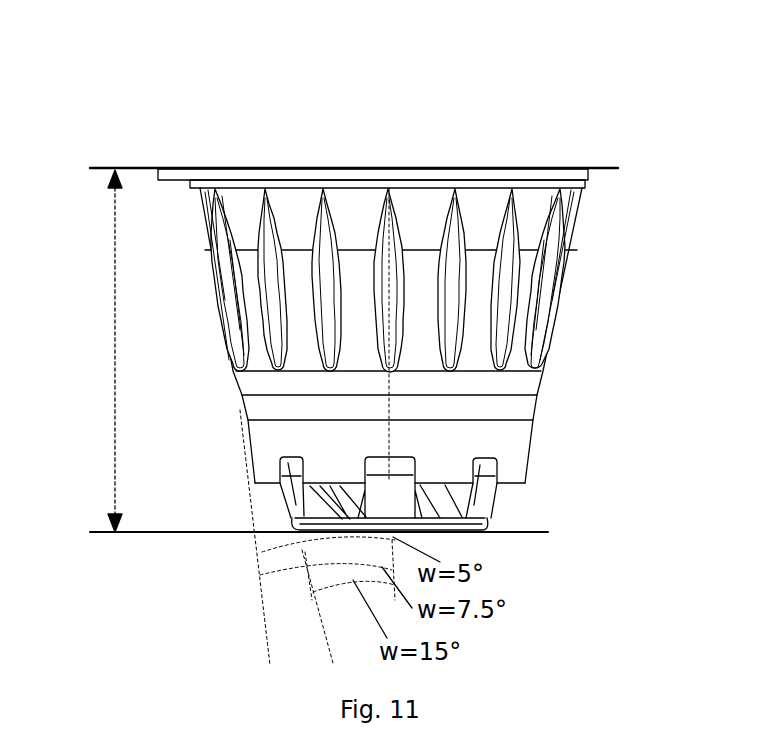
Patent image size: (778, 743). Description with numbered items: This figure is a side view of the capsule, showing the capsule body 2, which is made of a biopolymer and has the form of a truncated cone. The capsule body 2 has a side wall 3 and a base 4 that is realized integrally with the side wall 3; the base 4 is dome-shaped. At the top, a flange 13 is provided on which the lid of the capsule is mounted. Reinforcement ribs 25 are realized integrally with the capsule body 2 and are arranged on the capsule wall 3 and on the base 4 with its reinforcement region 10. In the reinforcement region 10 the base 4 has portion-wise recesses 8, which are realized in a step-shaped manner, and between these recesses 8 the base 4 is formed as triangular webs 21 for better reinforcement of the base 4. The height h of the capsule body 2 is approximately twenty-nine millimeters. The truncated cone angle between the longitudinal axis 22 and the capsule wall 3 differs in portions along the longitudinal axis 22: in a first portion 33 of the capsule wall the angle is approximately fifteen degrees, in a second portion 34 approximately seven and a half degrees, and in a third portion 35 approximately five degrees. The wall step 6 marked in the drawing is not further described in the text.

The capsule body 2 is at (400, 78).
The side wall 3 is at (242, 403).
The base 4 is at (415, 514).
The wall step 6 is at (450, 410).
The portion-wise recesses 8 is at (402, 508).
The reinforcement region 10 is at (232, 508).
The flange 13 is at (172, 167).
The triangular webs 21 is at (437, 497).
The longitudinal axis 22 is at (388, 140).
The reinforcement ribs 25 is at (400, 220).
The first portion 33 is at (205, 247).
The second portion 34 is at (217, 303).
The third portion 35 is at (245, 451).
The height h is at (112, 330).